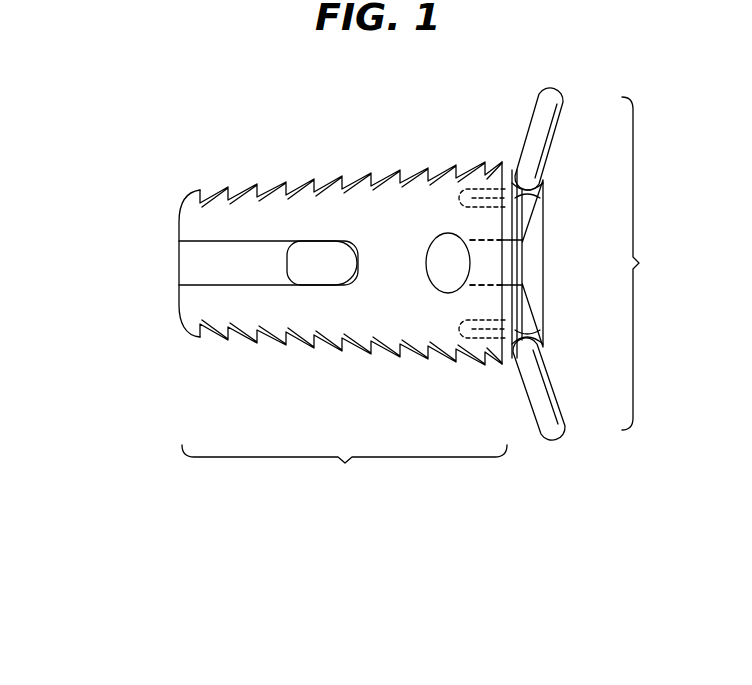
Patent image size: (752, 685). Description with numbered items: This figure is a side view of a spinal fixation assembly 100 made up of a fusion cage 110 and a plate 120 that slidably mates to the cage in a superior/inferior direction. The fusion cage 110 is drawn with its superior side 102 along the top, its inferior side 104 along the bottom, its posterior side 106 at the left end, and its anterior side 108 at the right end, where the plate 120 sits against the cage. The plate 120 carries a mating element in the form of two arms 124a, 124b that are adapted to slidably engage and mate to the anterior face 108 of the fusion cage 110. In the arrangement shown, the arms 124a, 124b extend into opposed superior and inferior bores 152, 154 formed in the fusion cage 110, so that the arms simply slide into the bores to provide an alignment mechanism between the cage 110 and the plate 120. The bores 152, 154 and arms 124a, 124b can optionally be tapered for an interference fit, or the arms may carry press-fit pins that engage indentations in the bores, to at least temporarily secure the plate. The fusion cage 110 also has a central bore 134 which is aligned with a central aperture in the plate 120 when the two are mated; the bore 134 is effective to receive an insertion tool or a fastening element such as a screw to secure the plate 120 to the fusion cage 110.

The spinal fixation assembly 100 is at (146, 134).
The superior side 102 is at (312, 160).
The inferior side 104 is at (259, 371).
The posterior side 106 is at (156, 264).
The anterior side 108 is at (514, 173).
The fusion cage 110 is at (344, 471).
The plate 120 is at (656, 263).
The arm 124a is at (484, 184).
The arm 124b is at (484, 344).
The central bore 134 is at (500, 297).
The superior bore 152 is at (457, 188).
The inferior bore 154 is at (457, 340).